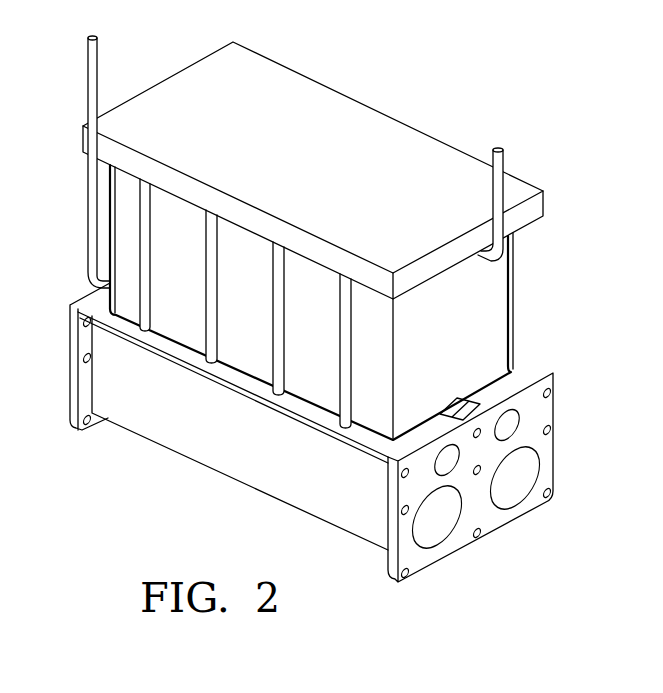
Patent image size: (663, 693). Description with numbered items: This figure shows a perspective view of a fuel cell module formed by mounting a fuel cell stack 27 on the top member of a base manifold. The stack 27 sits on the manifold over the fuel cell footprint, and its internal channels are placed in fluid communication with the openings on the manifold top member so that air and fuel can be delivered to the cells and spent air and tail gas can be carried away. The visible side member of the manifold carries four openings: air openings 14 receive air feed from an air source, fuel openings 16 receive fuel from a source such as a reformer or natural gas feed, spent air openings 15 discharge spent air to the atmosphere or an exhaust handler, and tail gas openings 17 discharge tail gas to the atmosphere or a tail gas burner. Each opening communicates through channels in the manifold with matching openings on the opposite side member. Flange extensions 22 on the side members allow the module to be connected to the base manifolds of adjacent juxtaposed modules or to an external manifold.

The fuel cell stack 27 is at (398, 160).
The flange extension 22 is at (75, 400).
The air opening 14 is at (513, 488).
The spent air opening 15 is at (432, 535).
The fuel opening 16 is at (507, 423).
The tail gas opening 17 is at (442, 458).